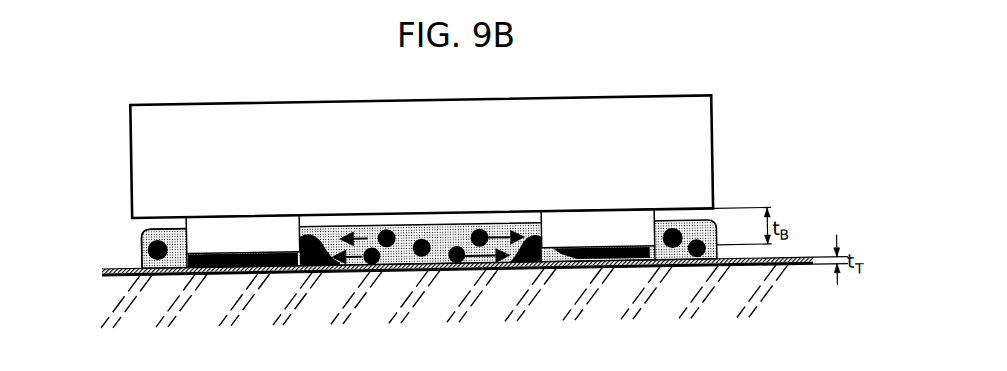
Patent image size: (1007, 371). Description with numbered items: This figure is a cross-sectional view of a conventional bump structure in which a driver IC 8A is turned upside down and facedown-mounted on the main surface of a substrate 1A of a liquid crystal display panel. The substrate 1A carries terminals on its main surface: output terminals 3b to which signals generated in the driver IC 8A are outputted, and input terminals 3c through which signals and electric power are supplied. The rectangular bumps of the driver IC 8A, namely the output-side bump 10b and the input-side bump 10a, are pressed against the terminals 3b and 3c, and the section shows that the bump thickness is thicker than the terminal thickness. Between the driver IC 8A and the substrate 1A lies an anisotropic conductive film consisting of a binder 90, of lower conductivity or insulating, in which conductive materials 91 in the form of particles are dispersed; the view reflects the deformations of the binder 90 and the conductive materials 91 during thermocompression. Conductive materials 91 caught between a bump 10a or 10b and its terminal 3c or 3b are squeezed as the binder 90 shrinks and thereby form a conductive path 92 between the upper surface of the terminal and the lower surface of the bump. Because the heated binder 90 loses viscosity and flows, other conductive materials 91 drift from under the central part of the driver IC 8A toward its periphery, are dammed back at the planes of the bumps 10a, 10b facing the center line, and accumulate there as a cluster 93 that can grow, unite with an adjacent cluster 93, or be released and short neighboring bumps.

The driver IC 8A is at (638, 117).
The input-side bump 10a is at (622, 236).
The output-side bump 10b is at (217, 240).
The output terminal 3b is at (128, 268).
The input terminal 3c is at (798, 269).
The substrate 1A is at (700, 318).
The binder 90 is at (400, 265).
The conductive materials 91 is at (158, 270).
The conductive path 92 is at (267, 271).
The cluster 93 is at (325, 271).